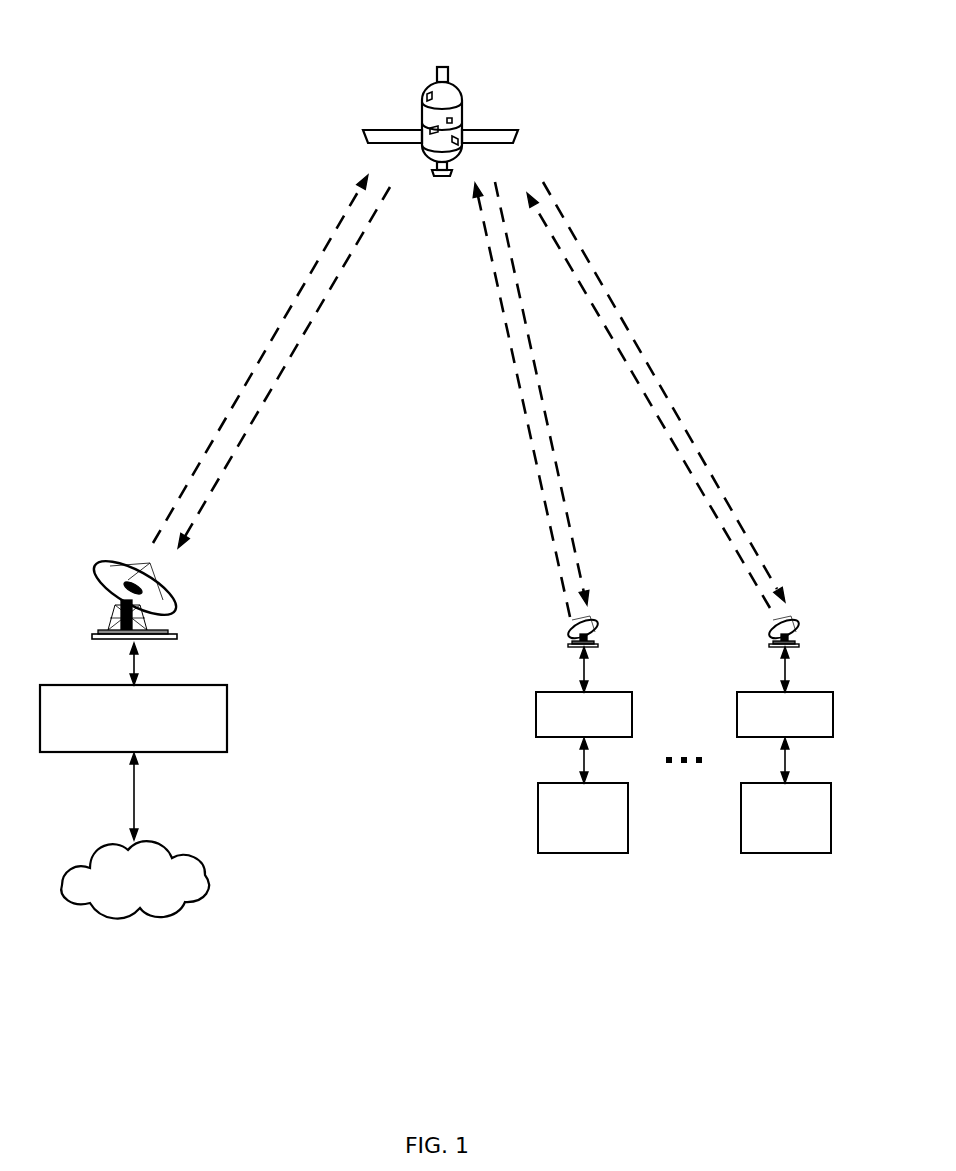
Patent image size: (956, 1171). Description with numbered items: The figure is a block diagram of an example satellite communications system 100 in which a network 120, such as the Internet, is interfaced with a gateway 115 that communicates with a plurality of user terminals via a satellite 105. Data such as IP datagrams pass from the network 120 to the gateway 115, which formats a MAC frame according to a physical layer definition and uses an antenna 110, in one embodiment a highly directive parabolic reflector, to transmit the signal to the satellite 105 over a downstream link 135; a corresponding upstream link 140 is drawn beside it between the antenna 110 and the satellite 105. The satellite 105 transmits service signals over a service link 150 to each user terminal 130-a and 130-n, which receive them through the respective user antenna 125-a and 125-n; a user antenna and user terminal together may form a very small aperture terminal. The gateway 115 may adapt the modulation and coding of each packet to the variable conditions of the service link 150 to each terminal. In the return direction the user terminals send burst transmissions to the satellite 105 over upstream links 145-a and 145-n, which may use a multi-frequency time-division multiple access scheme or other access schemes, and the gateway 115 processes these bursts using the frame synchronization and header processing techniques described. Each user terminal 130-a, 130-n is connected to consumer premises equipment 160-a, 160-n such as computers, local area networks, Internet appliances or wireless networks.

The satellite communications system 100 is at (682, 945).
The satellite 105 is at (440, 67).
The antenna 110 is at (178, 606).
The gateway 115 is at (228, 718).
The network 120 is at (212, 886).
The user antenna 125-a is at (568, 636).
The user antenna 125-n is at (769, 636).
The user terminal 130-a is at (536, 710).
The user terminal 130-n is at (737, 710).
The downstream link 135 is at (262, 362).
The upstream link 140 is at (327, 295).
The upstream link 145-a is at (523, 401).
The upstream link 145-n is at (648, 400).
The service link 150 is at (562, 498).
The consumer premises equipment 160-a is at (568, 853).
The consumer premises equipment 160-n is at (771, 853).